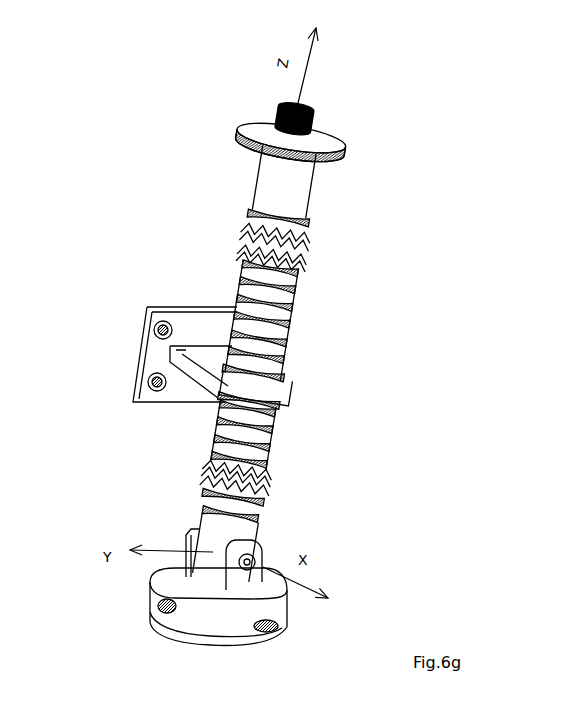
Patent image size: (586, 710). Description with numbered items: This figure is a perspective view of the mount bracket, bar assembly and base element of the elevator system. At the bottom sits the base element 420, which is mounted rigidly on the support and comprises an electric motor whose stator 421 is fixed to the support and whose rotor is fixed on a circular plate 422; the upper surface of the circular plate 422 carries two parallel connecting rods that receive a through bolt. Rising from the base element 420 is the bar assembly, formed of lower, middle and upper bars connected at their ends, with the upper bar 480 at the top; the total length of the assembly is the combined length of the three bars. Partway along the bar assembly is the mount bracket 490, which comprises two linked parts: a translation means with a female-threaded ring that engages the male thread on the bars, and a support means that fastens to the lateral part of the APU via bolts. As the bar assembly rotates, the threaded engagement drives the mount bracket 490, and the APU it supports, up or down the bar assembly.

The upper bar 480 is at (284, 433).
The mount bracket 490 is at (160, 286).
The base element 420 is at (167, 531).
The stator 421 is at (280, 633).
The circular plate 422 is at (153, 590).